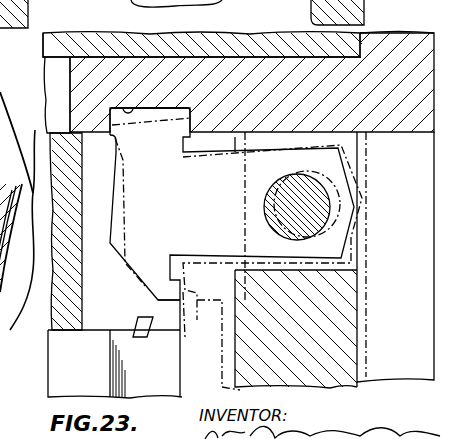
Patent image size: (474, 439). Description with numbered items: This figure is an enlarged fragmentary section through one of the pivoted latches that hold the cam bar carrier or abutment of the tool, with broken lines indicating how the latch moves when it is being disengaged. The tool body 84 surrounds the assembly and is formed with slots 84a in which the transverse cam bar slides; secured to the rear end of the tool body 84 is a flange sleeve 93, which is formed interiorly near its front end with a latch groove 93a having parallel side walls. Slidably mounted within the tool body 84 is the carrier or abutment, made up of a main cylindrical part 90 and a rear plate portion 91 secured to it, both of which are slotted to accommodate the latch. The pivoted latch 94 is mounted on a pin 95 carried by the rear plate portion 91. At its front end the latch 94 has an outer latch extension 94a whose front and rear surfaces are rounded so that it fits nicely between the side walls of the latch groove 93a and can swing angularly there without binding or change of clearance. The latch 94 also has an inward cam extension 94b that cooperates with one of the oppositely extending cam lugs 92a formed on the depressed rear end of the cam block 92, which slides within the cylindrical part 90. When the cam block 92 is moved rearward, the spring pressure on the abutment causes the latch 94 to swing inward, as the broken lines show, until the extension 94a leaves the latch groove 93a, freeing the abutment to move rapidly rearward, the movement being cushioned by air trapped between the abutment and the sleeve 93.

The tool body 84 is at (280, 42).
The slots 84a is at (53, 72).
The main cylindrical part 90 is at (60, 288).
The rear plate portion 91 is at (334, 378).
The cam block 92 is at (62, 371).
The cam lugs 92a is at (145, 336).
The flange sleeve 93 is at (410, 44).
The latch groove 93a is at (126, 106).
The pivoted latch 94 is at (107, 269).
The outer latch extension 94a is at (158, 108).
The inward cam extension 94b is at (142, 288).
The pins 95 is at (344, 212).